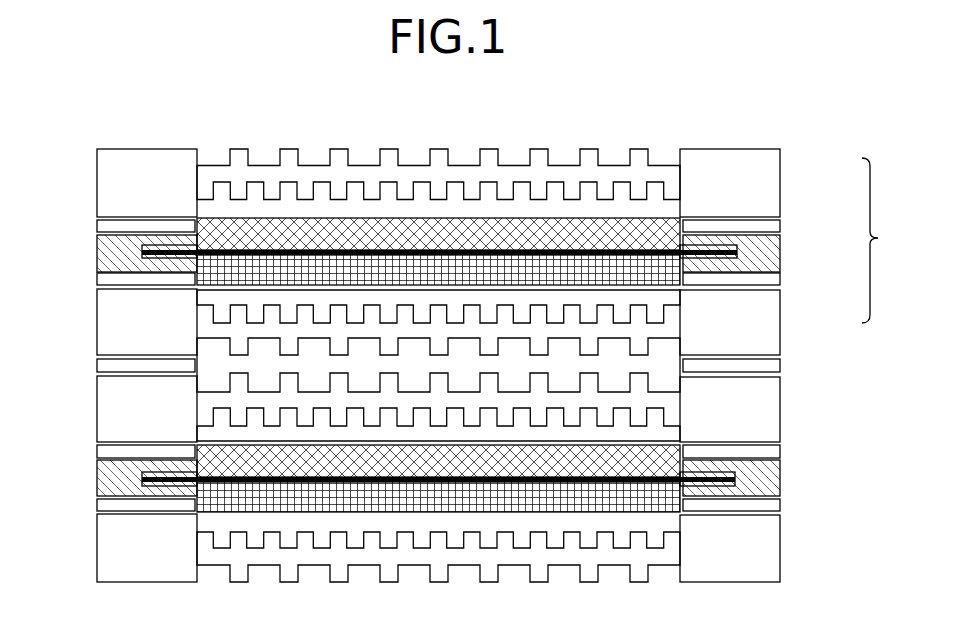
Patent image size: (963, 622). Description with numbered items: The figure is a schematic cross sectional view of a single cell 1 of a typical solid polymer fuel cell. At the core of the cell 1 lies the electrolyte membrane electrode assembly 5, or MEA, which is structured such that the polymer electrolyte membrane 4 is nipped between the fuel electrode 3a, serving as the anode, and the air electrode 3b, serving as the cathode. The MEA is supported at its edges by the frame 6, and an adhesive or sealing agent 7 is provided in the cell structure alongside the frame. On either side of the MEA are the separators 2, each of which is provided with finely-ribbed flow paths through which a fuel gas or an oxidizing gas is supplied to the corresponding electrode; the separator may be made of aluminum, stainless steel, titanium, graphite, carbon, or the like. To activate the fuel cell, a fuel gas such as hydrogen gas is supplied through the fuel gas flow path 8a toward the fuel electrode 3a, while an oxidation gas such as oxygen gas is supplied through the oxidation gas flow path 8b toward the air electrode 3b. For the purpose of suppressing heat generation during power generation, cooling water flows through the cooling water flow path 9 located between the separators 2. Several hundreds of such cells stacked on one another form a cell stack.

The cell 1 is at (575, 122).
The separator 2 is at (748, 168).
The fuel electrode 3a is at (649, 273).
The air electrode 3b is at (651, 236).
The polymer electrolyte membrane 4 is at (703, 250).
The electrolyte membrane electrode assembly 5 is at (881, 240).
The frame 6 is at (110, 242).
The adhesive or sealing agent 7 is at (110, 227).
The fuel gas flow path 8a is at (585, 297).
The oxidation gas flow path 8b is at (258, 195).
The cooling water flow path 9 is at (367, 363).